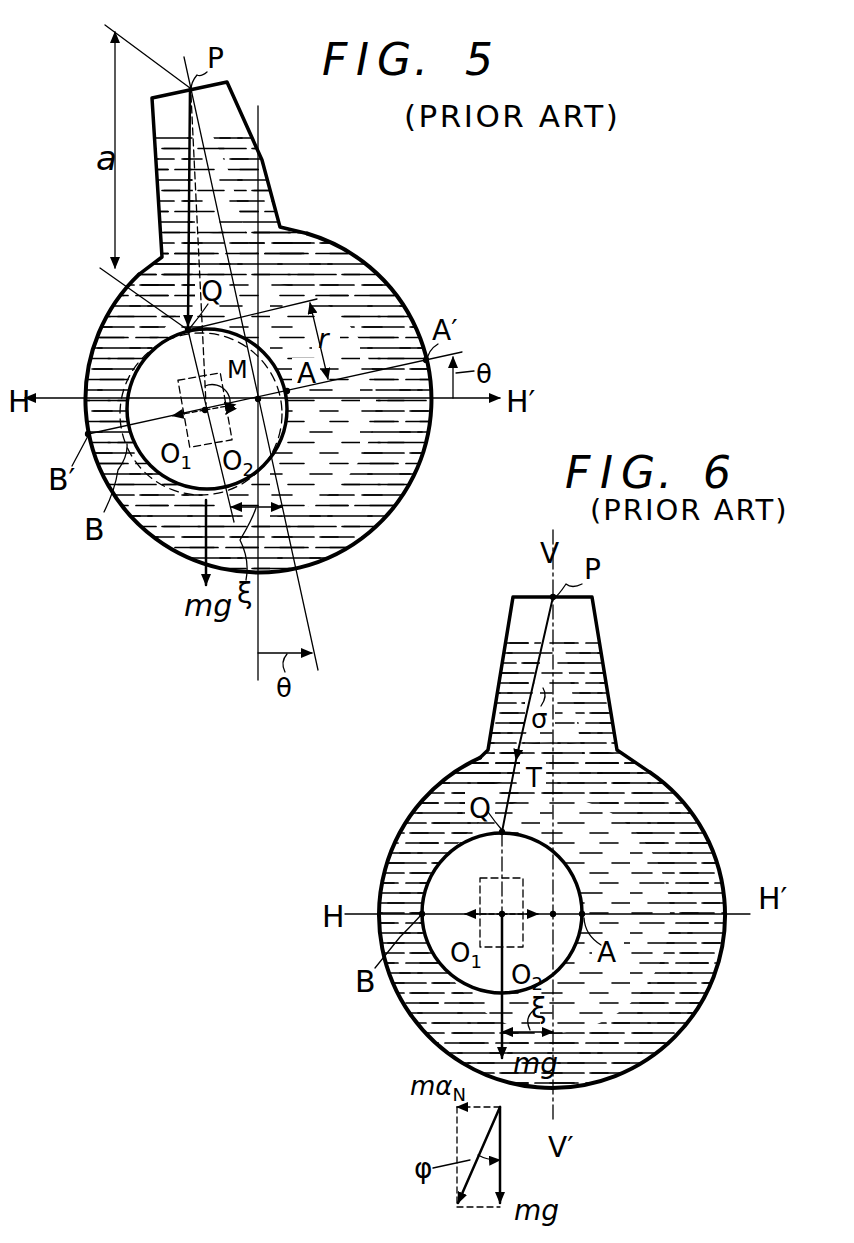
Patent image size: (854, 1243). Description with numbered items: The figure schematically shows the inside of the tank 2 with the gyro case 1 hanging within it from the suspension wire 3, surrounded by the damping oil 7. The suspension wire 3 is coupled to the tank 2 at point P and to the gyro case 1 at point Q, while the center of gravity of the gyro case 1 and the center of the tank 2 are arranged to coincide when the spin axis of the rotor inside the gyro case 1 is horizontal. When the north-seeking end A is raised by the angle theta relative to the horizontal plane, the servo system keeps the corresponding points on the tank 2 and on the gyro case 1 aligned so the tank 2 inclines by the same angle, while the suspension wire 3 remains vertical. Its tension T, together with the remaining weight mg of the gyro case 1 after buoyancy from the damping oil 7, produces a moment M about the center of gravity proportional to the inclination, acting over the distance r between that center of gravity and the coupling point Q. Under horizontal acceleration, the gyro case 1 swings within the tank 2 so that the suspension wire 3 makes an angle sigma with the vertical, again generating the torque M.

In FIG. 5, the gyro case 1 is at (143, 357).
In FIG. 6, the gyro case 1 is at (580, 891).
In FIG. 5, the tank 2 is at (332, 237).
In FIG. 6, the tank 2 is at (660, 771).
In FIG. 5, the suspension wire 3 is at (186, 97).
In FIG. 6, the suspension wire 3 is at (542, 622).
In FIG. 5, the damping oil 7 is at (407, 482).
In FIG. 6, the damping oil 7 is at (680, 1016).